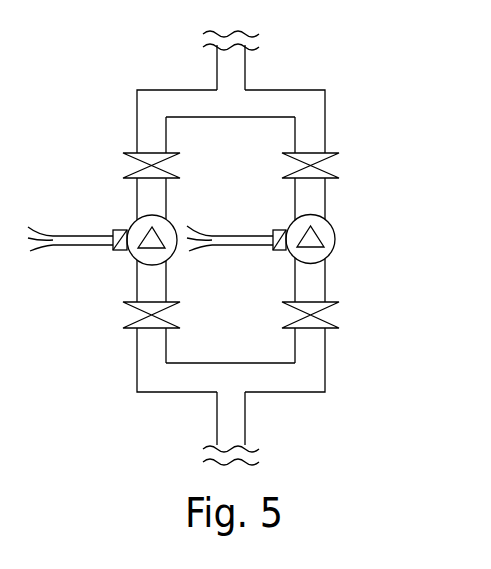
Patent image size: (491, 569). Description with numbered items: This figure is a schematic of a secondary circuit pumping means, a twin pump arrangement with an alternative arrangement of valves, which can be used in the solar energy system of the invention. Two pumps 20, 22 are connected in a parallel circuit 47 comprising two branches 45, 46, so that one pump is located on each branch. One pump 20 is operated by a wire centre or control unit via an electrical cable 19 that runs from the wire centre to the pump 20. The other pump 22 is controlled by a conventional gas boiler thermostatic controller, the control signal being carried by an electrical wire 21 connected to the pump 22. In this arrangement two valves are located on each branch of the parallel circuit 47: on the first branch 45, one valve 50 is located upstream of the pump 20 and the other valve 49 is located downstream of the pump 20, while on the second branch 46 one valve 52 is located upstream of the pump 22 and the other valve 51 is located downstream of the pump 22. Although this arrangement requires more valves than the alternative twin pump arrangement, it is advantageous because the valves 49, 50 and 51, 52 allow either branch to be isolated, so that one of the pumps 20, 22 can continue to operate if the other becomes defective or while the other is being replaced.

The electrical cable 19 is at (69, 235).
The pump 20 is at (135, 223).
The electrical wire 21 is at (238, 233).
The pump 22 is at (334, 235).
The branch 45 is at (166, 89).
The branch 46 is at (288, 91).
The parallel circuit 47 is at (339, 401).
The valve 49 is at (131, 151).
The valve 50 is at (130, 308).
The valve 51 is at (333, 152).
The valve 52 is at (329, 307).